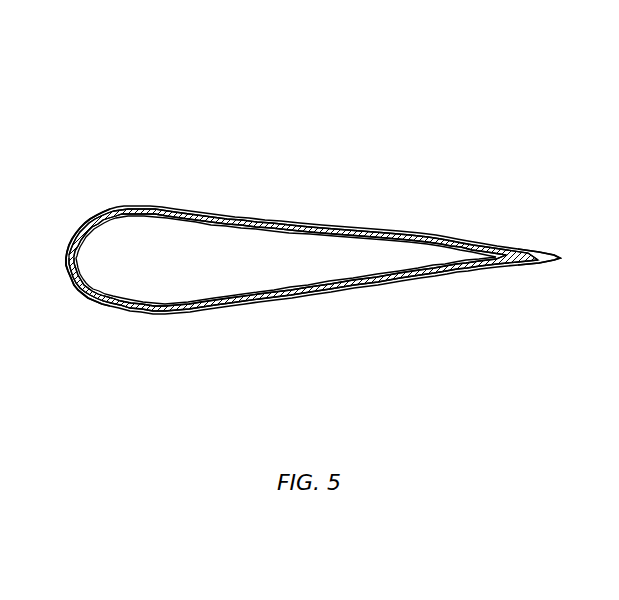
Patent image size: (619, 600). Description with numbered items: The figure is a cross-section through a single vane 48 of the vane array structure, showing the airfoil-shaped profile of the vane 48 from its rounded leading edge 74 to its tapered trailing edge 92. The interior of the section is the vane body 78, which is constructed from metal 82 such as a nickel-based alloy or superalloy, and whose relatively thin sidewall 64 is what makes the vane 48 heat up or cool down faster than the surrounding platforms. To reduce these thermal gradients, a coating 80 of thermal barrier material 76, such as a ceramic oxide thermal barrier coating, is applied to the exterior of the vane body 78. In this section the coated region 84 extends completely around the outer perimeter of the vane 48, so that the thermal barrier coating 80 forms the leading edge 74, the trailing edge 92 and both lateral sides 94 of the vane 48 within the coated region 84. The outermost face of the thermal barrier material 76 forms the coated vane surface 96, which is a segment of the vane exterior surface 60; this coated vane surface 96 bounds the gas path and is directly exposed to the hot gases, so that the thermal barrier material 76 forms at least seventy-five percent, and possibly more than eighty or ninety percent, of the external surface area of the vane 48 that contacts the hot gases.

The vane 48 is at (388, 114).
The exterior surface 60 is at (131, 322).
The leading edge 74 is at (66, 262).
The trailing edge 92 is at (562, 258).
The lateral sides 94 is at (318, 224).
The coated vane surface 96 is at (375, 232).
The coated region 84 is at (353, 303).
The vane body 78 is at (194, 288).
The sidewall 64 is at (290, 198).
The metal 82 is at (236, 218).
The thermal barrier material 76 is at (290, 332).
The coating 80 is at (186, 323).